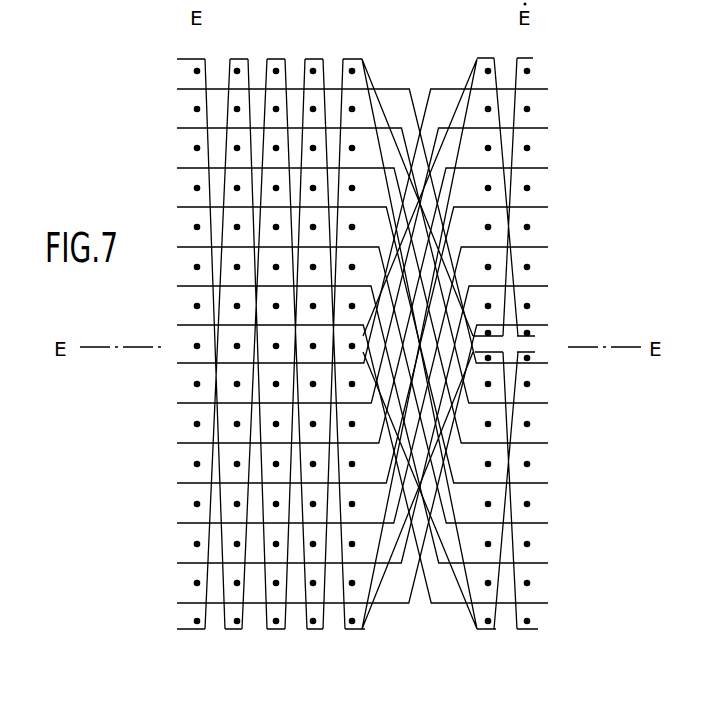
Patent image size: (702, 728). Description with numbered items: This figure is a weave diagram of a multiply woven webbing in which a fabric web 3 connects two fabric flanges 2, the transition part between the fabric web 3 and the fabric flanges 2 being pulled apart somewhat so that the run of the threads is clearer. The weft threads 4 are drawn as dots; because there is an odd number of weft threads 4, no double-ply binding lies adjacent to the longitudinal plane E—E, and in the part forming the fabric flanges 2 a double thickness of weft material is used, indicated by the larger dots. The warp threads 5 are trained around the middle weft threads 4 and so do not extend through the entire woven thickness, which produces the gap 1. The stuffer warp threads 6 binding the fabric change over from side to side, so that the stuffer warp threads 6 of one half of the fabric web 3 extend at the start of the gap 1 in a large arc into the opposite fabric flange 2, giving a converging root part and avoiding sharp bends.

The gap 1 is at (530, 342).
The fabric flange 2 is at (556, 128).
The fabric web 3 is at (233, 643).
The weft thread 4 is at (313, 71).
The warp thread 5 is at (327, 577).
The stuffer warp thread 6 is at (195, 168).